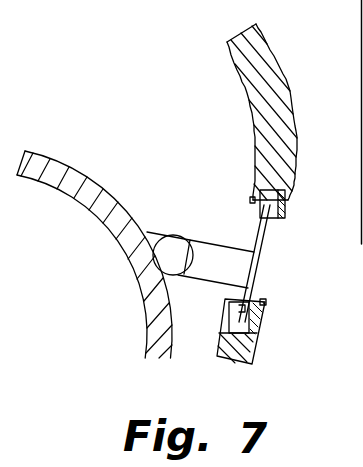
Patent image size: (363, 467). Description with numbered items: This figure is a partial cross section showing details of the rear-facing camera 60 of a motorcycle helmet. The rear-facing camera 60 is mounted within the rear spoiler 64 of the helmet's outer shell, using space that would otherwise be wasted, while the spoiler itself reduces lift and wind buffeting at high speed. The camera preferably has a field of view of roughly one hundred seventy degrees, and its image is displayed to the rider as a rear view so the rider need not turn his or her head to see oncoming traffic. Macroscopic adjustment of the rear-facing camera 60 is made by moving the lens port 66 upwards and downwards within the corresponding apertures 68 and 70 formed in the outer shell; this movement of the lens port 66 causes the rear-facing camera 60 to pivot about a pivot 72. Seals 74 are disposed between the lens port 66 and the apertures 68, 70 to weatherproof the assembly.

The rear-facing camera 60 is at (222, 247).
The rear spoiler 64 is at (268, 62).
The lens port 66 is at (265, 247).
The aperture 68 is at (293, 196).
The aperture 70 is at (259, 337).
The pivot 72 is at (176, 256).
The seal 74 is at (252, 200).